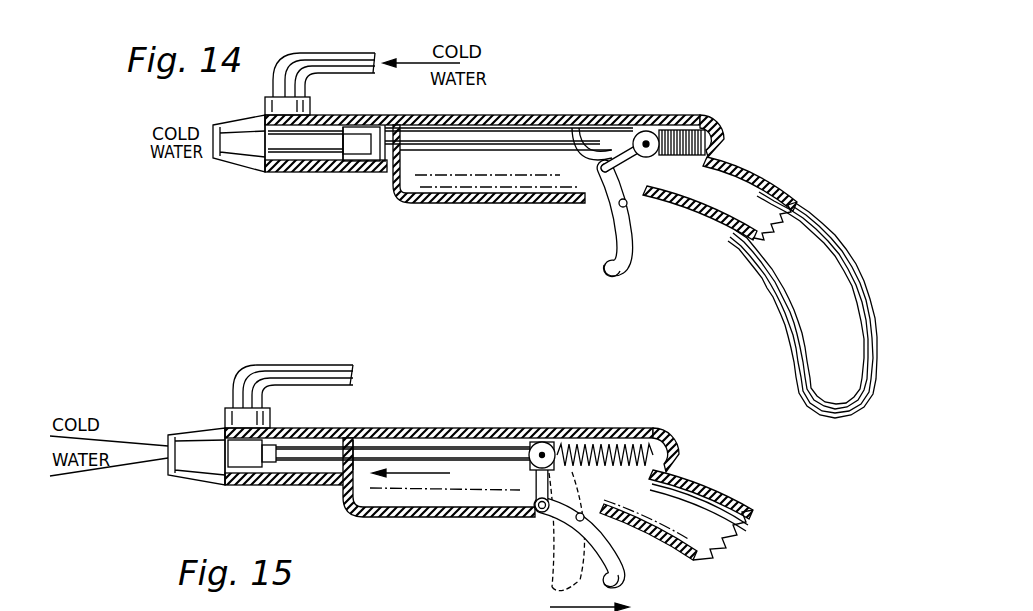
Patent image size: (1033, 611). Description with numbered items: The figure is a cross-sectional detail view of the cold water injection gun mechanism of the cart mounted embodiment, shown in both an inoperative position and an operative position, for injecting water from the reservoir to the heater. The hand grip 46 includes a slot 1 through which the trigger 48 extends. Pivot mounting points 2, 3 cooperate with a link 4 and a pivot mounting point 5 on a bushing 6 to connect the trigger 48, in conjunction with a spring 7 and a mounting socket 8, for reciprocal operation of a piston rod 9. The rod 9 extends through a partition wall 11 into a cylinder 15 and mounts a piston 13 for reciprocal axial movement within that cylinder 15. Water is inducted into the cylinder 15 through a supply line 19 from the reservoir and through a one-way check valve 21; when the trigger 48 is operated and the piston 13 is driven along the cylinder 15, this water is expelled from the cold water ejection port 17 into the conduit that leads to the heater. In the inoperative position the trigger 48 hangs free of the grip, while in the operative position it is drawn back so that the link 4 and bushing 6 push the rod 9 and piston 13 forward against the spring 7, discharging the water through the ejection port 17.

In FIG. 14, the slot 1 is at (588, 203).
In FIG. 15, the slot 1 is at (622, 535).
In FIG. 14, the pivot mounting point 2 is at (612, 220).
In FIG. 15, the pivot mounting point 2 is at (575, 532).
In FIG. 14, the pivot mounting point 3 is at (578, 128).
In FIG. 15, the pivot mounting point 3 is at (537, 518).
In FIG. 14, the link 4 is at (628, 135).
In FIG. 15, the link 4 is at (560, 478).
In FIG. 14, the pivot mounting point 5 is at (703, 118).
In FIG. 14, the bushing 6 is at (640, 128).
In FIG. 15, the bushing 6 is at (534, 443).
In FIG. 14, the spring 7 is at (712, 133).
In FIG. 15, the spring 7 is at (570, 443).
In FIG. 14, the mounting socket 8 is at (720, 152).
In FIG. 15, the mounting socket 8 is at (665, 433).
In FIG. 14, the piston rod 9 is at (500, 127).
In FIG. 15, the piston rod 9 is at (433, 453).
In FIG. 14, the partition wall 11 is at (382, 175).
In FIG. 15, the partition wall 11 is at (352, 435).
In FIG. 14, the piston 13 is at (350, 173).
In FIG. 15, the piston 13 is at (252, 470).
In FIG. 14, the cylinder 15 is at (288, 168).
In FIG. 15, the cylinder 15 is at (318, 474).
In FIG. 14, the cold water ejection port 17 is at (220, 165).
In FIG. 15, the cold water ejection port 17 is at (183, 481).
In FIG. 14, the supply line 19 is at (337, 53).
In FIG. 15, the supply line 19 is at (293, 365).
In FIG. 14, the one-way check valve 21 is at (316, 110).
In FIG. 15, the one-way check valve 21 is at (225, 410).
In FIG. 14, the hand grip 46 is at (805, 202).
In FIG. 15, the hand grip 46 is at (745, 495).
In FIG. 14, the trigger 48 is at (625, 258).
In FIG. 15, the trigger 48 is at (618, 583).